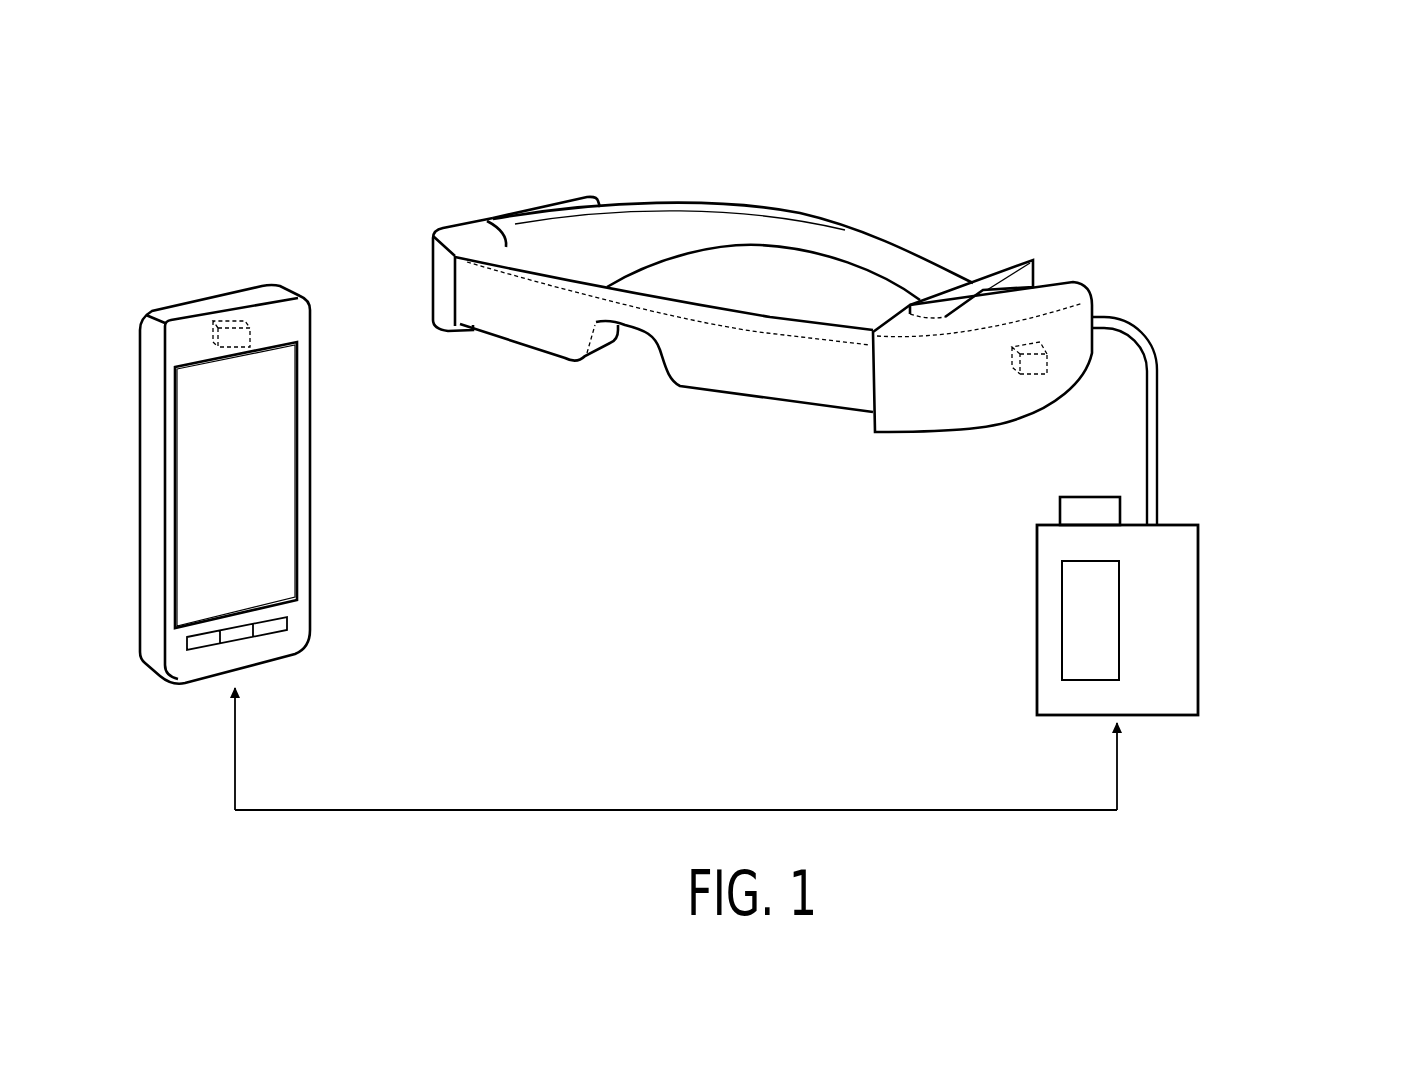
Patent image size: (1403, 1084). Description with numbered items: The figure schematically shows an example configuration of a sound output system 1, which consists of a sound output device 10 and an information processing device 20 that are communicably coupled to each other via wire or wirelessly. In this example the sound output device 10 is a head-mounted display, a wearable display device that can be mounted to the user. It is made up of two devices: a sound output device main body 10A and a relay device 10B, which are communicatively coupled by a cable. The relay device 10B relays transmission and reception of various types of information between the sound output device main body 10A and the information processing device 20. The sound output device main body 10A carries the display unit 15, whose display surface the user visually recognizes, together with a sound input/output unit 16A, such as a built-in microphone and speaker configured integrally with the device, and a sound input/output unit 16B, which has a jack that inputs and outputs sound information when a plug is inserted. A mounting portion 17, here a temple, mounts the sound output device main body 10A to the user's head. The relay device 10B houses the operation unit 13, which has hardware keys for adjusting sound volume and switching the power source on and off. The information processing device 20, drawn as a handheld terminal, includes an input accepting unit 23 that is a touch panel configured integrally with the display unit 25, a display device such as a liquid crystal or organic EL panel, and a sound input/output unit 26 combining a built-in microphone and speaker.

The sound output system 1 is at (402, 125).
The sound output device 10 is at (1203, 180).
The sound output device main body 10A is at (737, 396).
The relay device 10B is at (1198, 613).
The operation unit 13 is at (1062, 608).
The display unit 15 is at (771, 337).
The sound input/output unit 16A is at (1042, 334).
The sound input/output unit 16B is at (1054, 504).
The mounting portion 17 is at (707, 192).
The information processing device 20 is at (251, 266).
The input accepting unit 23 is at (308, 485).
The display unit 25 is at (258, 440).
The sound input/output unit 26 is at (262, 326).